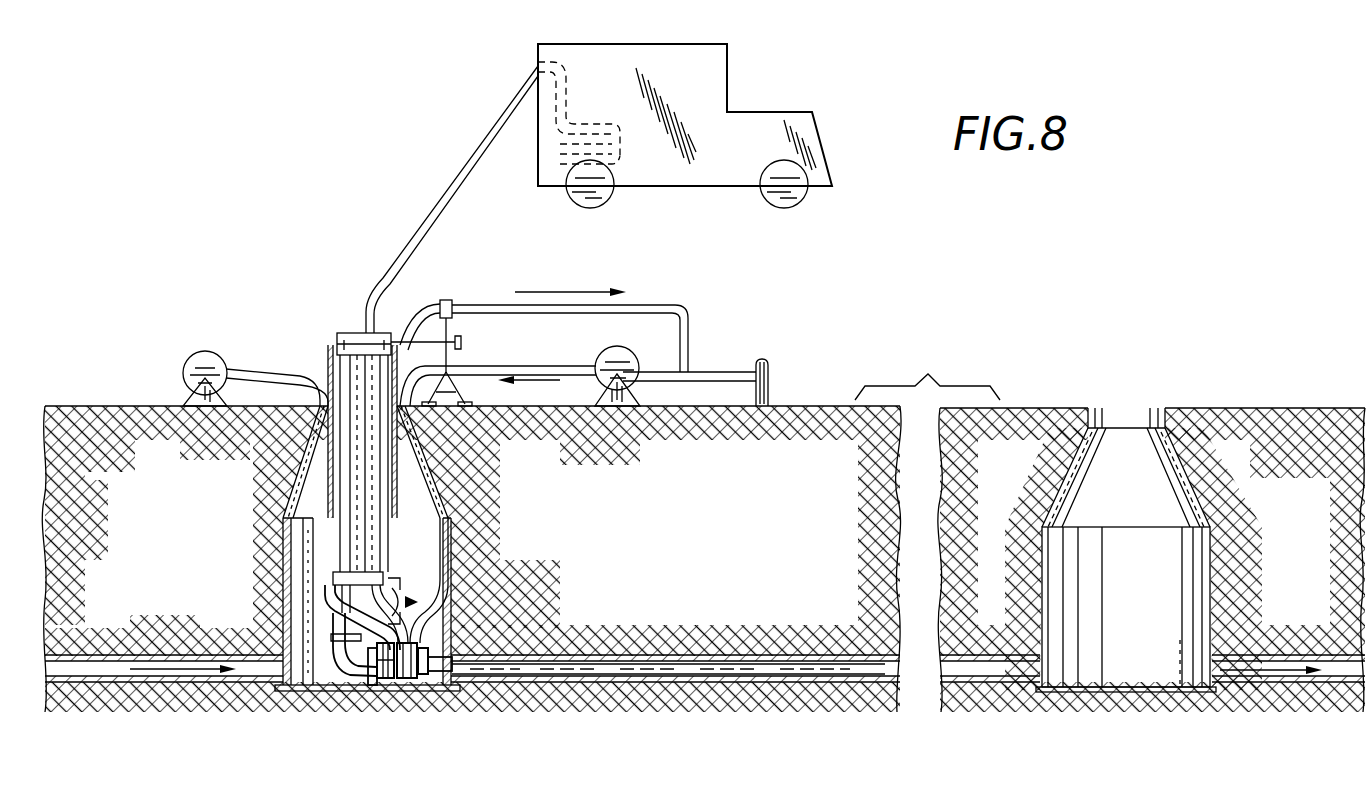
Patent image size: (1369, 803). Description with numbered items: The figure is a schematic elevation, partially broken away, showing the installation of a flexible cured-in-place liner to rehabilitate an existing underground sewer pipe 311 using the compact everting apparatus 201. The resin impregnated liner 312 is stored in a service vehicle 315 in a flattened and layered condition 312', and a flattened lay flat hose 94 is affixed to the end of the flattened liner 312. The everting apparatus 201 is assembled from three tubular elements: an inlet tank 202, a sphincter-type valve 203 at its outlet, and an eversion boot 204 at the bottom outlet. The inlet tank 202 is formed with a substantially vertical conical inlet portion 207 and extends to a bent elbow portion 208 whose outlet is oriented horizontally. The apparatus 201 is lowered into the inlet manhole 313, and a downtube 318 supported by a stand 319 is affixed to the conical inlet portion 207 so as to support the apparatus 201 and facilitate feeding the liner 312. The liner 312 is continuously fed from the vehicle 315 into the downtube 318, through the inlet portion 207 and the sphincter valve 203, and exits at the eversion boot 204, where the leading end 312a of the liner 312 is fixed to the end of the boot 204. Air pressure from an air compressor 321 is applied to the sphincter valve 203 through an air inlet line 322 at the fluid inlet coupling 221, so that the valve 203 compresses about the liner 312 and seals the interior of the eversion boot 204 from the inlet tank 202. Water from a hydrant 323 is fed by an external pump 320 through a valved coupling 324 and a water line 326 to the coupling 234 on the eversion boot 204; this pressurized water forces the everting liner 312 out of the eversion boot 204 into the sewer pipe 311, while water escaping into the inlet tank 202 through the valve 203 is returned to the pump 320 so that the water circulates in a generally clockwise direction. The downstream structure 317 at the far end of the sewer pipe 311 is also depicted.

The service vehicle 315 is at (730, 85).
The flattened and layered condition of liner 312' is at (585, 105).
The lay flat hose 94 is at (622, 160).
The resin impregnated liner 312 is at (617, 370).
The downtube 318 is at (333, 360).
The air compressor 321 is at (198, 355).
The air inlet line 322 is at (290, 372).
The stand 319 is at (447, 316).
The external pump 320 is at (618, 350).
The valved coupling 324 is at (700, 372).
The hydrant 323 is at (767, 378).
The water line 326 is at (477, 372).
The manhole 317 is at (1128, 445).
The everting apparatus 201 is at (457, 553).
The inlet tank 202 is at (282, 615).
The conical inlet portion 207 is at (335, 548).
The inlet manhole 313 is at (335, 565).
The bent elbow portion 208 is at (343, 668).
The fluid inlet coupling 221 is at (368, 690).
The sphincter-type valve 203 is at (385, 690).
The eversion boot 204 is at (432, 690).
The secondary coupling 234 is at (425, 600).
The leading end of liner 312a is at (430, 657).
The underground sewer pipe 311 is at (808, 655).